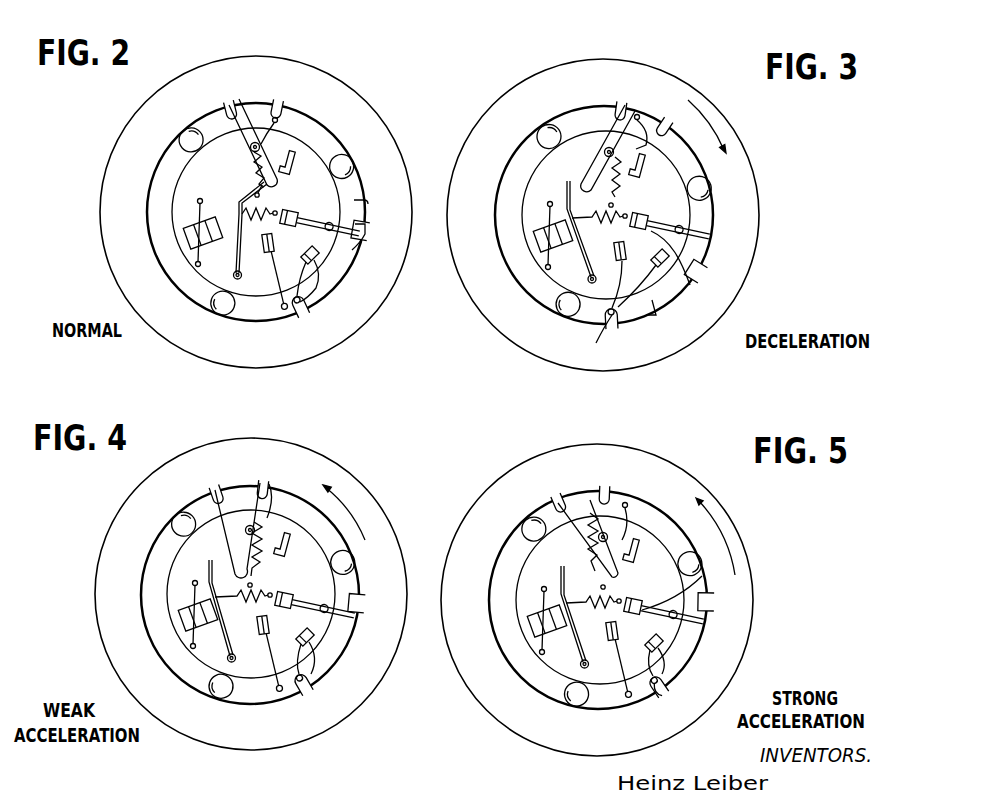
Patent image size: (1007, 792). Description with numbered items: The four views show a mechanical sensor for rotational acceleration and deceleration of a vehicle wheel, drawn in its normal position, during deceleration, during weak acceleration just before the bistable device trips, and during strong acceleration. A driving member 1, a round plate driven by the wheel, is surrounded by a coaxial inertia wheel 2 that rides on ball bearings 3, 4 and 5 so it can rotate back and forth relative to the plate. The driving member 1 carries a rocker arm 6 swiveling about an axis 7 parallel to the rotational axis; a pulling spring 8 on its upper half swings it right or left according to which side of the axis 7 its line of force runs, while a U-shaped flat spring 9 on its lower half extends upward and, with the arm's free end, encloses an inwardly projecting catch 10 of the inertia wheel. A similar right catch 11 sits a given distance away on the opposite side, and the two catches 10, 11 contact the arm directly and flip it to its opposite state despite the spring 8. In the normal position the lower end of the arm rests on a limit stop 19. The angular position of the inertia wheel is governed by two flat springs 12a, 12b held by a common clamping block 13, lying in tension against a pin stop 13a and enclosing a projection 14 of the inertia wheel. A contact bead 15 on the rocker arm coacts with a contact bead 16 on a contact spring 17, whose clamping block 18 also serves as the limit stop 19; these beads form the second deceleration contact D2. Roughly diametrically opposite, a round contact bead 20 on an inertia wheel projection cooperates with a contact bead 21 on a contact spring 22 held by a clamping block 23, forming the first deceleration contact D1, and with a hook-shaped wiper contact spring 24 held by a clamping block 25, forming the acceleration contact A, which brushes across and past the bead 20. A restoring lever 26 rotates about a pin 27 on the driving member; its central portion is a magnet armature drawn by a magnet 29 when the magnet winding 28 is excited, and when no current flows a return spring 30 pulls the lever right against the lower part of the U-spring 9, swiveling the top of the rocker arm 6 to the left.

In FIG. 2, the driving member 1 is at (247, 212).
In FIG. 2, the inertia wheel 2 is at (248, 212).
In FIG. 2, the ball bearing 3 is at (179, 139).
In FIG. 2, the ball bearing 4 is at (222, 313).
In FIG. 2, the ball bearing 5 is at (347, 159).
In FIG. 2, the rocker arm 6 is at (253, 132).
In FIG. 2, the axis 7 is at (282, 129).
In FIG. 2, the pulling spring 8 is at (242, 220).
In FIG. 2, the U-shaped flat spring 9 is at (238, 163).
In FIG. 2, the catch 10 is at (220, 101).
In FIG. 2, the right catch 11 is at (287, 100).
In FIG. 4, the right catch 11 is at (250, 473).
In FIG. 2, the flat spring 12a is at (372, 251).
In FIG. 2, the flat spring 12b is at (376, 216).
In FIG. 2, the clamping block 13 is at (290, 202).
In FIG. 2, the pin stop 13a is at (328, 209).
In FIG. 2, the projection 14 is at (357, 234).
In FIG. 3, the contact bead 15 is at (620, 94).
In FIG. 3, the contact bead 16 is at (629, 138).
In FIG. 3, the contact spring 17 is at (662, 137).
In FIG. 3, the clamping block 18 is at (649, 168).
In FIG. 2, the limit stop 19 is at (298, 165).
In FIG. 3, the limit stop 19 is at (632, 182).
In FIG. 3, the contact bead 20 is at (625, 323).
In FIG. 5, the contact bead 20 is at (683, 680).
In FIG. 3, the contact bead 21 is at (590, 334).
In FIG. 3, the contact spring 22 is at (629, 284).
In FIG. 3, the clamping block 23 is at (606, 247).
In FIG. 3, the contact spring 24 is at (645, 296).
In FIG. 5, the contact spring 24 is at (643, 655).
In FIG. 3, the clamping block 25 is at (682, 271).
In FIG. 4, the restoring lever 26 is at (196, 590).
In FIG. 4, the pin 27 is at (234, 618).
In FIG. 4, the magnet winding 28 is at (205, 651).
In FIG. 4, the magnet 29 is at (164, 619).
In FIG. 4, the return spring 30 is at (257, 653).
In FIG. 3, the first deceleration contact D1 is at (613, 342).
In FIG. 4, the first deceleration contact D1 is at (277, 710).
In FIG. 5, the first deceleration contact D1 is at (635, 714).
In FIG. 3, the second deceleration contact D2 is at (656, 71).
In FIG. 4, the second deceleration contact D2 is at (285, 472).
In FIG. 5, the second deceleration contact D2 is at (632, 479).
In FIG. 3, the acceleration contact A is at (646, 336).
In FIG. 4, the acceleration contact A is at (314, 704).
In FIG. 5, the acceleration contact A is at (664, 704).